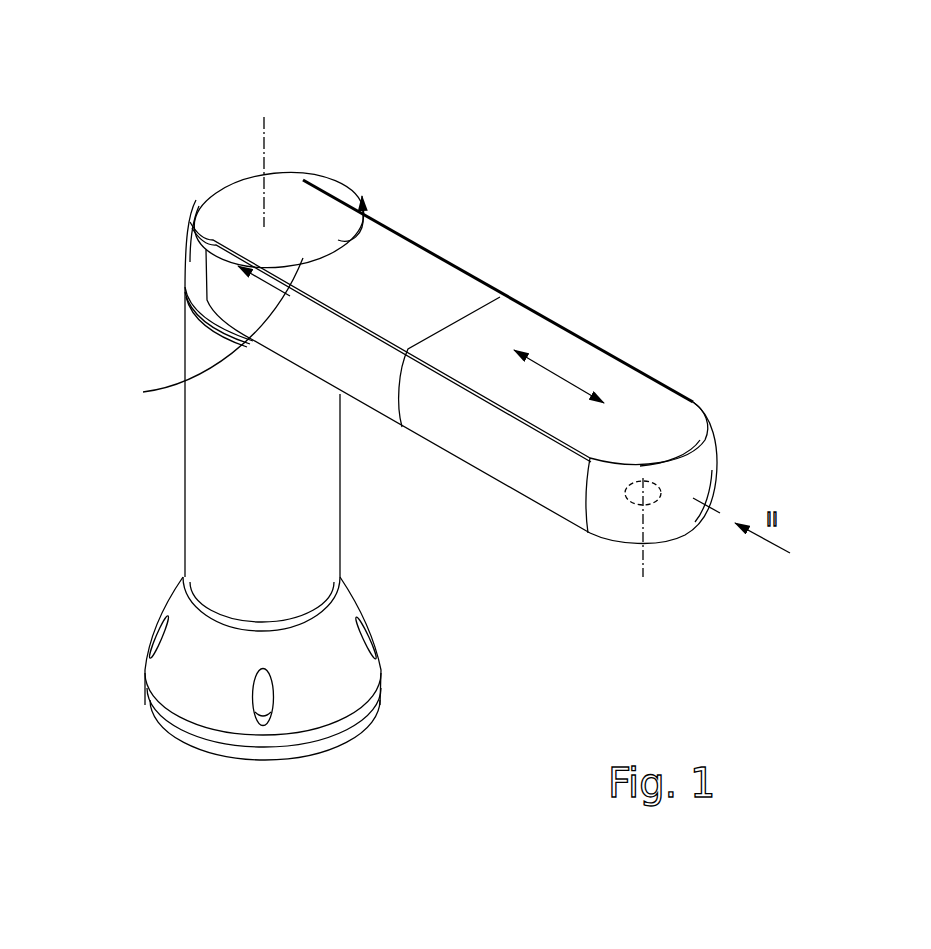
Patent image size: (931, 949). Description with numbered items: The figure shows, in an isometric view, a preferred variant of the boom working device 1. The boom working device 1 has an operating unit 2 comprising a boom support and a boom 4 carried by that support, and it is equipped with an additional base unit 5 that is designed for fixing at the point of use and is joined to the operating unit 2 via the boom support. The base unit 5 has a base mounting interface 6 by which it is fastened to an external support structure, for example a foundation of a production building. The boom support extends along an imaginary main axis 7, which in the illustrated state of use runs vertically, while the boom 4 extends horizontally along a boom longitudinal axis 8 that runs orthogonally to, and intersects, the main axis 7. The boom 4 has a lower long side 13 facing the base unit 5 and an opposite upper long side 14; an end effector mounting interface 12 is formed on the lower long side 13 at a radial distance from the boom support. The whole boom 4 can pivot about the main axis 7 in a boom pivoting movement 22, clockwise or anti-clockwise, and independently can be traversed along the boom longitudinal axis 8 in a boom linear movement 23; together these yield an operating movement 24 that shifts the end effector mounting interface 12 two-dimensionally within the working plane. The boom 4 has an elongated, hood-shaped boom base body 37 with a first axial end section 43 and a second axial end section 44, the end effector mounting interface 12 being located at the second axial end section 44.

The boom working device 1 is at (200, 118).
The operating unit 2 is at (457, 263).
The boom 4 is at (511, 477).
The base unit 5 is at (183, 518).
The base mounting interface 6 is at (267, 698).
The main axis 7 is at (268, 140).
The boom longitudinal axis 8 is at (718, 510).
The end effector mounting interface 12 is at (627, 483).
The lower long side 13 is at (406, 450).
The upper long side 14 is at (410, 243).
The boom pivoting movement 22 is at (338, 240).
The boom linear movement 23 is at (580, 380).
The operating movement 24 is at (547, 370).
The boom base body 37 is at (682, 427).
The first axial end section 43 is at (215, 213).
The second axial end section 44 is at (708, 472).